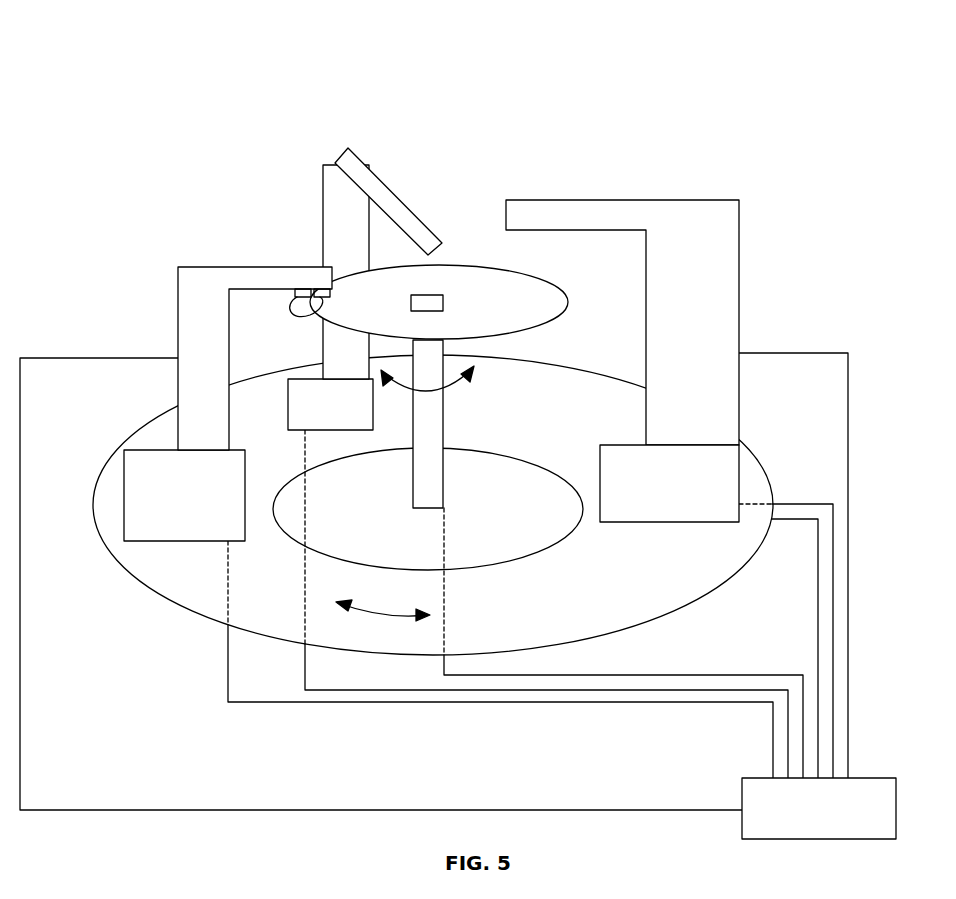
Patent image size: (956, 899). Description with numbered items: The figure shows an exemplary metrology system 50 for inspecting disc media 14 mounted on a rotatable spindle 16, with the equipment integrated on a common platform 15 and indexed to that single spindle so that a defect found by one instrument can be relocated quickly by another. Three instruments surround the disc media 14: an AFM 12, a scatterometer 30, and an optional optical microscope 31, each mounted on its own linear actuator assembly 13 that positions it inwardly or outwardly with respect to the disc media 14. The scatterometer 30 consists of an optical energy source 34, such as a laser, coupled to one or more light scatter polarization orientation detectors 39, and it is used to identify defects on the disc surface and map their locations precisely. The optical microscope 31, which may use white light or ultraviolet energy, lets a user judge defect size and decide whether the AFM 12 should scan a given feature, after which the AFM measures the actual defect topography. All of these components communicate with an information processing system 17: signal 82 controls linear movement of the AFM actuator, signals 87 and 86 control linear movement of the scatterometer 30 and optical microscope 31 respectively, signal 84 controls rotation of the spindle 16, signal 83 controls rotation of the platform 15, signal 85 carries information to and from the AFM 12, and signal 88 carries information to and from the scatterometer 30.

The metrology system 50 is at (790, 42).
The AFM 12 is at (678, 200).
The linear actuator assembly 13 is at (742, 475).
The disc media 14 is at (484, 265).
The platform 15 is at (153, 608).
The spindle 16 is at (432, 508).
The information processing system 17 is at (757, 778).
The scatterometer 30 is at (214, 195).
The optical microscope 31 is at (348, 148).
The optical energy source 34 is at (195, 263).
The light scatter polarization orientation detector 39 is at (305, 300).
The signal 82 is at (791, 503).
The signal 83 is at (818, 533).
The signal 84 is at (688, 675).
The signal 85 is at (757, 353).
The signal 86 is at (350, 690).
The signal 87 is at (240, 702).
The signal 88 is at (55, 358).